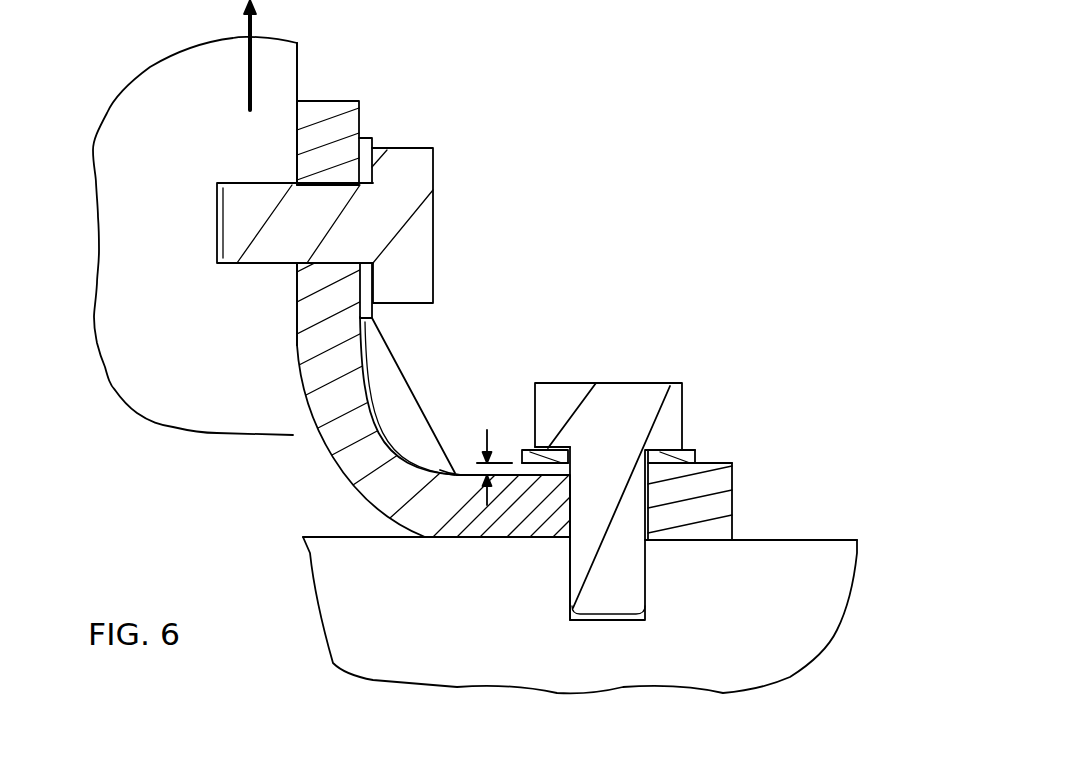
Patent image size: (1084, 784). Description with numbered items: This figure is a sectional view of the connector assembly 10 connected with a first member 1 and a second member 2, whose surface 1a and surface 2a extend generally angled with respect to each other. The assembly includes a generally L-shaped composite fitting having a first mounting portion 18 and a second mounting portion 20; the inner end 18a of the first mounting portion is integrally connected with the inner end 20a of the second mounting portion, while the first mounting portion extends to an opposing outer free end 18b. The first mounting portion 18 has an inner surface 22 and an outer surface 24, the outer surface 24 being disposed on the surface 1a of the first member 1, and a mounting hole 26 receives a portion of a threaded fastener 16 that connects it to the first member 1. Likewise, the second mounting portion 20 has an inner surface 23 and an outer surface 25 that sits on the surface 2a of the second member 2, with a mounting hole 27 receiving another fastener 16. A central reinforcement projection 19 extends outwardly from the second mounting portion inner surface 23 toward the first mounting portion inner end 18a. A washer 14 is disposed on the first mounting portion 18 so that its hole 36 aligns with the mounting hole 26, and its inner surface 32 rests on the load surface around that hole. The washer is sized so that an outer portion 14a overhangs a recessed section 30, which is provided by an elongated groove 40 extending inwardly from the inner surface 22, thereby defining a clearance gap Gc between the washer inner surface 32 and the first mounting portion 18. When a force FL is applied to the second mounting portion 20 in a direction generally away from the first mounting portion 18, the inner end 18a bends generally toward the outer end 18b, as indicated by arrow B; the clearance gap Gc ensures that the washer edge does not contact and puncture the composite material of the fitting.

The first member 1 is at (802, 673).
The surface of first member 1a is at (827, 540).
The second member 2 is at (123, 111).
The surface of second member 2a is at (297, 70).
The connector assembly 10 is at (749, 192).
The washer 14 is at (701, 437).
The outer portion of washer 14a is at (530, 450).
The fastener 16 is at (447, 202).
The first mounting portion 18 is at (768, 456).
The inner end of first mounting portion 18a is at (378, 488).
The outer free end of first mounting portion 18b is at (733, 498).
The central reinforcement projection 19 is at (387, 370).
The second mounting portion 20 is at (268, 312).
The inner end of second mounting portion 20a is at (365, 433).
The inner surface of first mounting portion 22 is at (726, 453).
The inner surface of second mounting portion 23 is at (359, 121).
The outer surface of first mounting portion 24 is at (695, 540).
The outer surface of second mounting portion 25 is at (297, 133).
The mounting hole 26 is at (578, 503).
The mounting hole 27 is at (327, 188).
The recessed section 30 is at (447, 447).
The inner surface of washer 32 is at (533, 463).
The washer hole 36 is at (570, 449).
The groove 40 is at (462, 475).
The arrow indicating bending B is at (399, 431).
The force FL is at (263, 55).
The clearance gap Gc is at (492, 455).